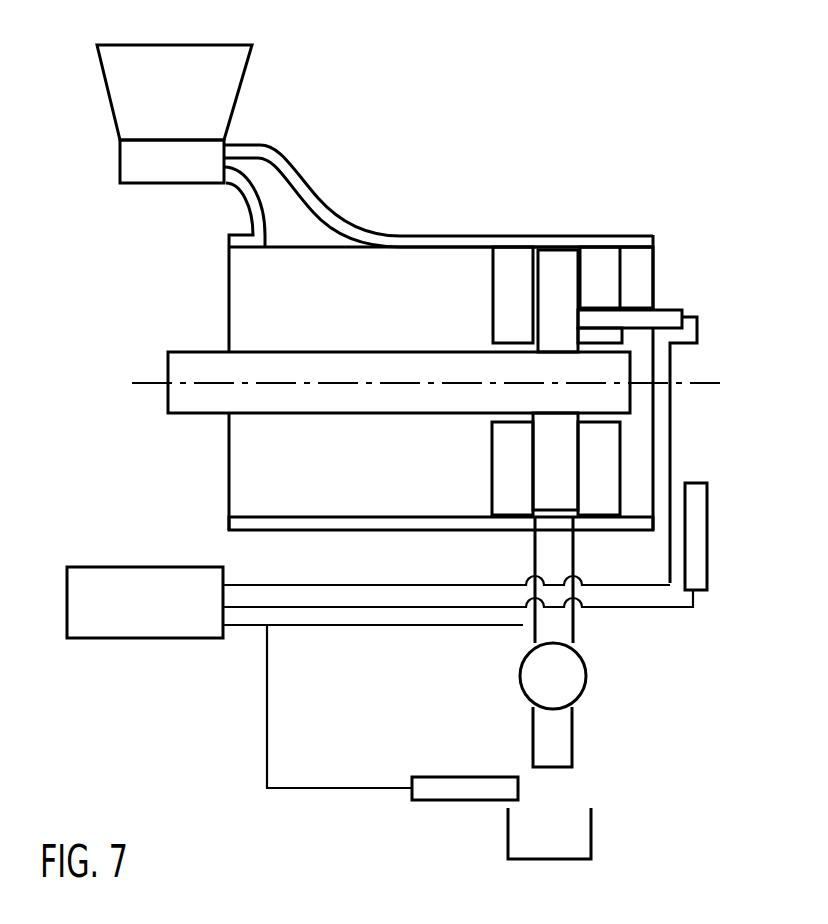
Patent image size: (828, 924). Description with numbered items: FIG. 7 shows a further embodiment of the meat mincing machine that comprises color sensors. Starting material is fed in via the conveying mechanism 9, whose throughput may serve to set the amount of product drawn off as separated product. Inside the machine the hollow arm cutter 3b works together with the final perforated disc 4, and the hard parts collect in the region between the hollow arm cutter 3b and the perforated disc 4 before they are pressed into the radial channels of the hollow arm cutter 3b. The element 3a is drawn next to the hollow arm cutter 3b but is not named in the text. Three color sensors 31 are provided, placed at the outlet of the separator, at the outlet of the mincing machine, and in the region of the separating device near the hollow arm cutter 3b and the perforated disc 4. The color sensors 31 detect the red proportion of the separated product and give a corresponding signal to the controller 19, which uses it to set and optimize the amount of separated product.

The conveying mechanism 9 is at (136, 183).
The stator part 3a is at (512, 258).
The hollow arm cutter 3b is at (557, 265).
The perforated disc 4 is at (601, 253).
The color sensor 31 is at (672, 310).
The controller 19 is at (90, 567).